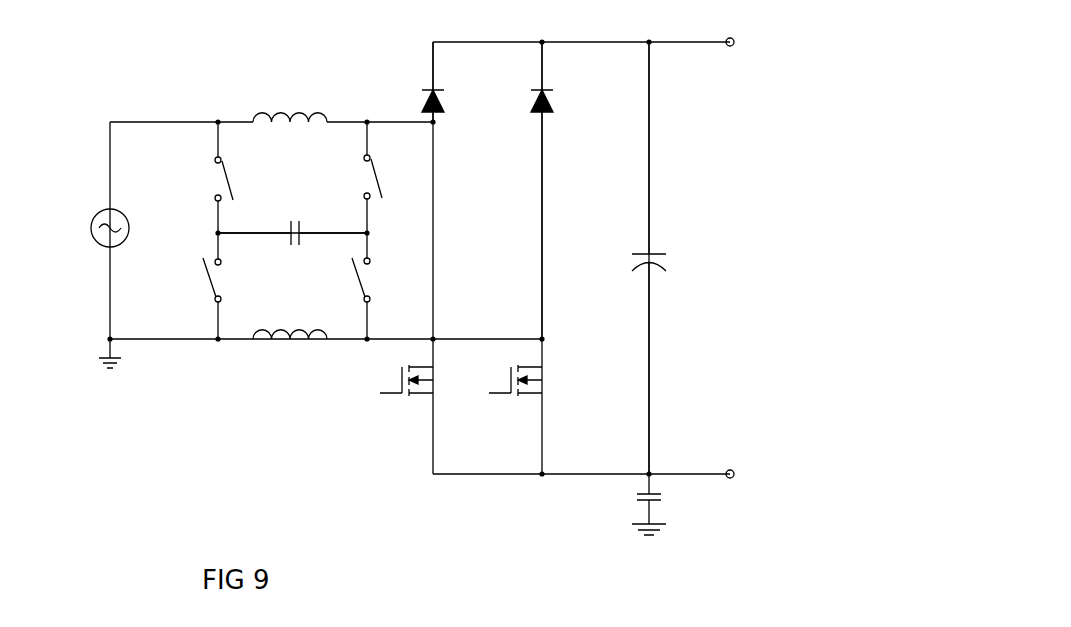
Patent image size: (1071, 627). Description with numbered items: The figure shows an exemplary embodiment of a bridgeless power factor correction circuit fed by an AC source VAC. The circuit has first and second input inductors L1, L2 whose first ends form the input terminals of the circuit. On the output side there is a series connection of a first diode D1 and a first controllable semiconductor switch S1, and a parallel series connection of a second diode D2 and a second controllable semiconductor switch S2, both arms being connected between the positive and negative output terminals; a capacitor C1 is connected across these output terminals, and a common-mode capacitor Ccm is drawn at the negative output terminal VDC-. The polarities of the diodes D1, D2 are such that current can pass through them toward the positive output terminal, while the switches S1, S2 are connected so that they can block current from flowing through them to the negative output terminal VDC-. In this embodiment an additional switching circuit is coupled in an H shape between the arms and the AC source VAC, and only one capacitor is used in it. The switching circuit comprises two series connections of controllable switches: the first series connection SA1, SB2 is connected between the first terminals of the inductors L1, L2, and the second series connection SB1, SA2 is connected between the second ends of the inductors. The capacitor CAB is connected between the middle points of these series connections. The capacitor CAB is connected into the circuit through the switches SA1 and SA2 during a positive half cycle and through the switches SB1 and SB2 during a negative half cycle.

The AC source VAC is at (89, 228).
The controllable switch SA1 is at (199, 177).
The controllable switch SB1 is at (349, 177).
The controllable switch SB2 is at (194, 286).
The controllable switch SA2 is at (343, 286).
The first input inductor L1 is at (290, 106).
The second input inductor L2 is at (290, 348).
The capacitor CAB is at (292, 224).
The first diode D1 is at (449, 82).
The second diode D2 is at (558, 190).
The capacitor C1 is at (632, 258).
The first controllable semiconductor switch S1 is at (402, 380).
The second controllable semiconductor switch S2 is at (511, 380).
The common-mode capacitor Ccm is at (665, 504).
The negative output terminal VDC- is at (753, 474).